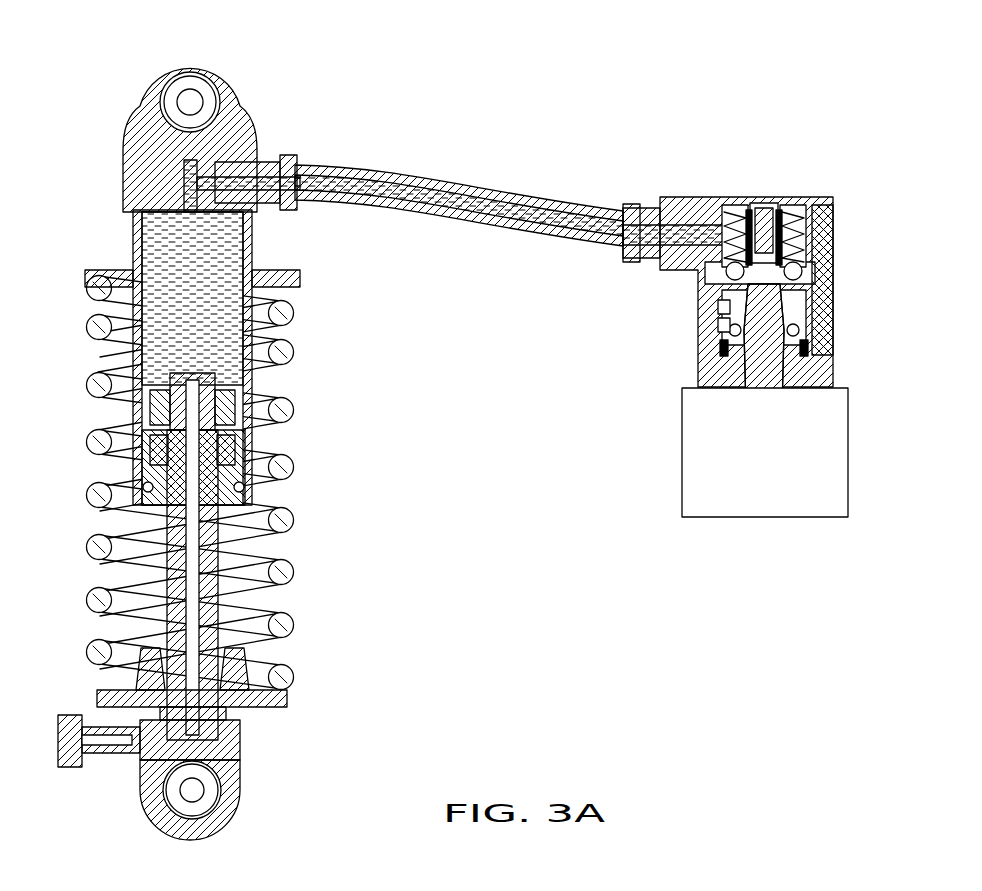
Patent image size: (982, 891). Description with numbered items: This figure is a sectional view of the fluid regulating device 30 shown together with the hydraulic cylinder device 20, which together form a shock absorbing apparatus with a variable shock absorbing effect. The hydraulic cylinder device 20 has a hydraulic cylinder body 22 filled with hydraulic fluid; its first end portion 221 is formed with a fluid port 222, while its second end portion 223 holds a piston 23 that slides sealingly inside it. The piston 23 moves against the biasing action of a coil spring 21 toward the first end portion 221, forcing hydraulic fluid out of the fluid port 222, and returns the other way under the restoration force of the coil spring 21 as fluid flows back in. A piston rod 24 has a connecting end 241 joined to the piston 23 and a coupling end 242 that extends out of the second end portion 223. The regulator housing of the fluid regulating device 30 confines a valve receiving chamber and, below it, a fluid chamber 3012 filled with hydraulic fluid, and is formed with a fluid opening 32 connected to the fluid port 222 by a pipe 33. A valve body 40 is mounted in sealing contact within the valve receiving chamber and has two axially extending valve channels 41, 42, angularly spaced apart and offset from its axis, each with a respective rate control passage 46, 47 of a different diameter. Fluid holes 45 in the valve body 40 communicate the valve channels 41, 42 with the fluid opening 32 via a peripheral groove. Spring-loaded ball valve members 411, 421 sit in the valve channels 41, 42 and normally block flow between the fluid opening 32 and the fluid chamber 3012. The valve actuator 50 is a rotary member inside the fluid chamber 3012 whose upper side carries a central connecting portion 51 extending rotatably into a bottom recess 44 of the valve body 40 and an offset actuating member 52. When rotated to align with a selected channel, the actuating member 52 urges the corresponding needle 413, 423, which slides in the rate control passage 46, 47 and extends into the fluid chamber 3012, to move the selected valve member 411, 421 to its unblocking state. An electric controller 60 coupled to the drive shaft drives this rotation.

The hydraulic cylinder device 20 is at (277, 446).
The coil spring 21 is at (288, 600).
The hydraulic cylinder body 22 is at (143, 248).
The first end portion 221 is at (210, 266).
The fluid port 222 is at (233, 130).
The second end portion 223 is at (245, 462).
The piston 23 is at (240, 395).
The piston rod 24 is at (200, 582).
The connecting end 241 is at (150, 440).
The coupling end 242 is at (245, 712).
The fluid regulating device 30 is at (715, 223).
The fluid chamber 3012 is at (712, 327).
The fluid opening 32 is at (702, 197).
The pipe 33 is at (445, 183).
The valve body 40 is at (628, 200).
The valve channel 41 is at (833, 242).
The valve member 411 is at (833, 268).
The needle 413 is at (833, 302).
The valve channel 42 is at (749, 197).
The valve member 421 is at (707, 273).
The needle 423 is at (718, 318).
The bottom recess 44 is at (761, 197).
The fluid hole 45 is at (718, 198).
The rate control passage 46 is at (833, 294).
The rate control passage 47 is at (713, 300).
The valve actuator 50 is at (800, 410).
The central connecting portion 51 is at (780, 197).
The actuating member 52 is at (833, 325).
The electric controller 60 is at (752, 518).